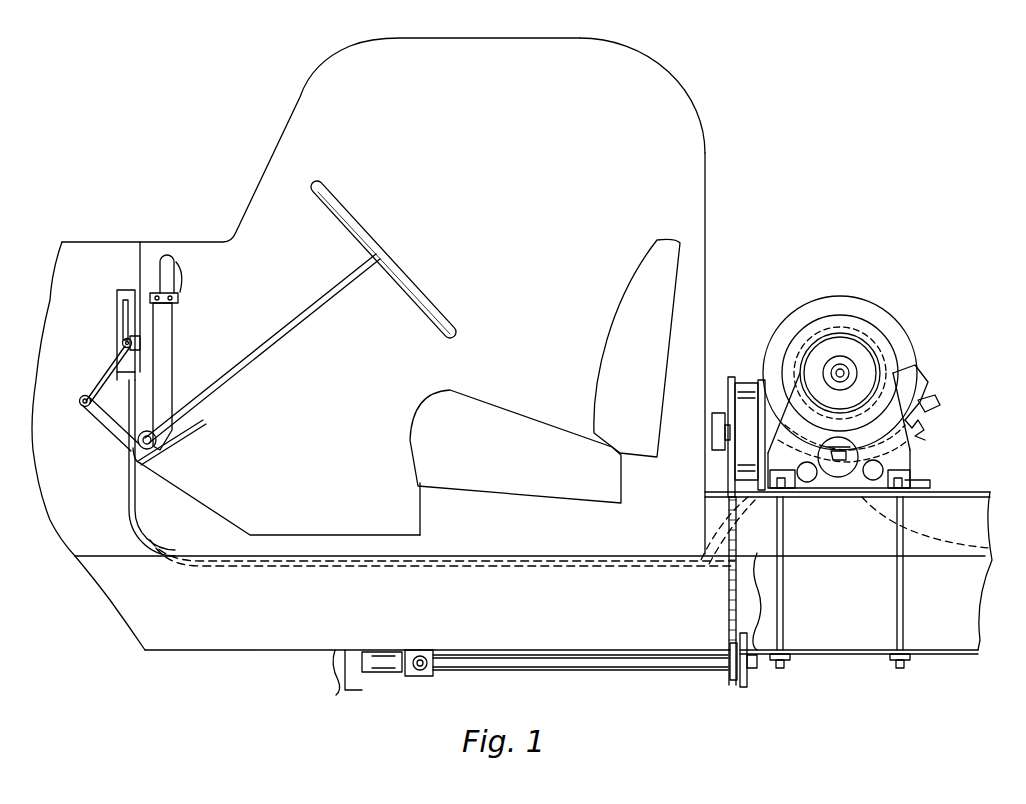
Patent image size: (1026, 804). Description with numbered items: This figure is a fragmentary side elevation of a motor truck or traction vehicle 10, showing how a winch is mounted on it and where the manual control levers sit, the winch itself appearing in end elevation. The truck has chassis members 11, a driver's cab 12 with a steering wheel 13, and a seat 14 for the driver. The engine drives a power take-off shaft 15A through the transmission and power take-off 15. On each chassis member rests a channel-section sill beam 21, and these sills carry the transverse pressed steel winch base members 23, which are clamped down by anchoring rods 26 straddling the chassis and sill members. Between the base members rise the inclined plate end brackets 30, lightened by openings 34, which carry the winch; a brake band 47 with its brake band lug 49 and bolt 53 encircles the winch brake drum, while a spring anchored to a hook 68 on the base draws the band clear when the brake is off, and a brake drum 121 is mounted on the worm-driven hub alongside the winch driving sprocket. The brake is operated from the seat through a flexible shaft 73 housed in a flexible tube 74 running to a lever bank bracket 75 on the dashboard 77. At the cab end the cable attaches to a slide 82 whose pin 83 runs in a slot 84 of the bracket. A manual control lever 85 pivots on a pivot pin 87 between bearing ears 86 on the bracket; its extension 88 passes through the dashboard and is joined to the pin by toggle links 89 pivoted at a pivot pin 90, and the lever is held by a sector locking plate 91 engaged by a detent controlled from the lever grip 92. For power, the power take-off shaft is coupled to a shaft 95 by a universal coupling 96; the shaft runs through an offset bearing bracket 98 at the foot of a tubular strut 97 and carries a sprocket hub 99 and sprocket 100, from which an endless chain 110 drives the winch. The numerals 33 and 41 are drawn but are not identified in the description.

The motor truck or traction vehicle 10 is at (680, 177).
The chassis members 11 is at (947, 637).
The driver's cab 12 is at (673, 84).
The steering wheel 13 is at (347, 207).
The seat 14 is at (495, 404).
The power take-off 15 is at (349, 682).
The power take-off shaft 15A is at (374, 674).
The sill beam 21 is at (976, 494).
The winch base members 23 is at (912, 484).
The anchoring rods 26 is at (903, 600).
The plate end brackets 30 is at (898, 455).
The engine housing 33 is at (903, 372).
The openings 34 is at (840, 494).
The flywheel 41 is at (876, 330).
The brake band 47 is at (845, 297).
The brake band lug 49 is at (928, 381).
The bolt 53 is at (938, 402).
The hook 68 is at (926, 427).
The flexible shaft 73 is at (854, 571).
The flexible tube 74 is at (167, 550).
The lever bank bracket 75 is at (128, 290).
The dashboard 77 is at (150, 467).
The slide 82 is at (141, 338).
The pin 83 is at (122, 345).
The slot 84 is at (123, 309).
The manual control lever 85 is at (172, 378).
The bearing ears 86 is at (160, 439).
The pivot pin 87 is at (176, 456).
The extension 88 is at (104, 434).
The toggle links 89 is at (102, 372).
The pivot pin 90 is at (81, 405).
The sector locking plate 91 is at (180, 420).
The lever grip 92 is at (180, 261).
The shaft 95 is at (618, 672).
The universal coupling 96 is at (418, 680).
The tubular strut 97 is at (726, 585).
The offset bearing bracket 98 is at (744, 690).
The sprocket hub 99 is at (757, 676).
The sprocket 100 is at (728, 680).
The endless chain 110 is at (712, 450).
The brake drum 121 is at (745, 382).